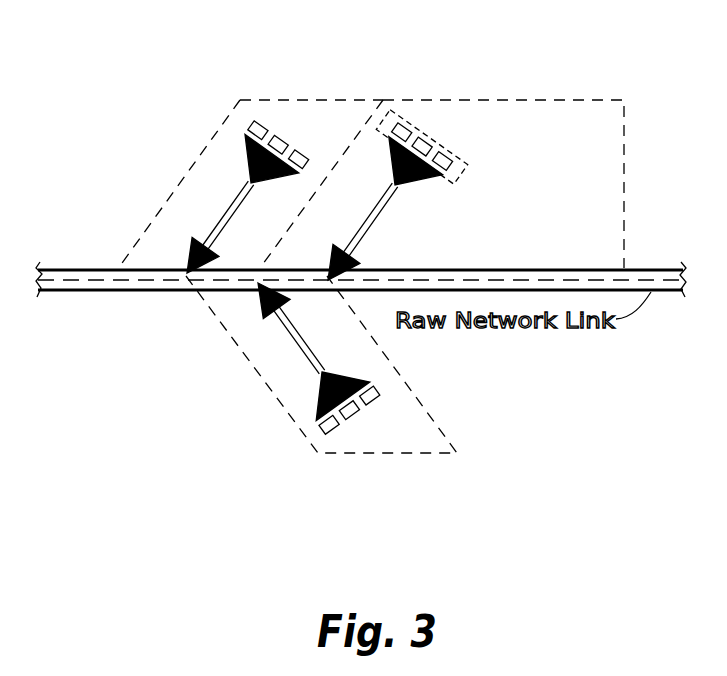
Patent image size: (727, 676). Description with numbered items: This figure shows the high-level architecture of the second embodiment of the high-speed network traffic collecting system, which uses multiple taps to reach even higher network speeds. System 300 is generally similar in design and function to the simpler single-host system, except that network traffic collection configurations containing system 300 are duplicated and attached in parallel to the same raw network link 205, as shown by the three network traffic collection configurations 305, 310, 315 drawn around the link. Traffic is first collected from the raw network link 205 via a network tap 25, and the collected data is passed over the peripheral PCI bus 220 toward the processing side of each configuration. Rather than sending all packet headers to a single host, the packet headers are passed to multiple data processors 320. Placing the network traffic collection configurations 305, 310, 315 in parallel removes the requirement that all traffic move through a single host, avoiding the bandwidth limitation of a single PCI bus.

The raw network link 205 is at (138, 292).
The network traffic collection configuration 305 is at (267, 99).
The network traffic collection configuration 310 is at (442, 155).
The network traffic collection configuration 315 is at (279, 443).
The peripheral PCI bus 220 is at (397, 231).
The system 300 is at (469, 158).
The data processors 320 is at (485, 167).
The network tap 25 is at (358, 261).